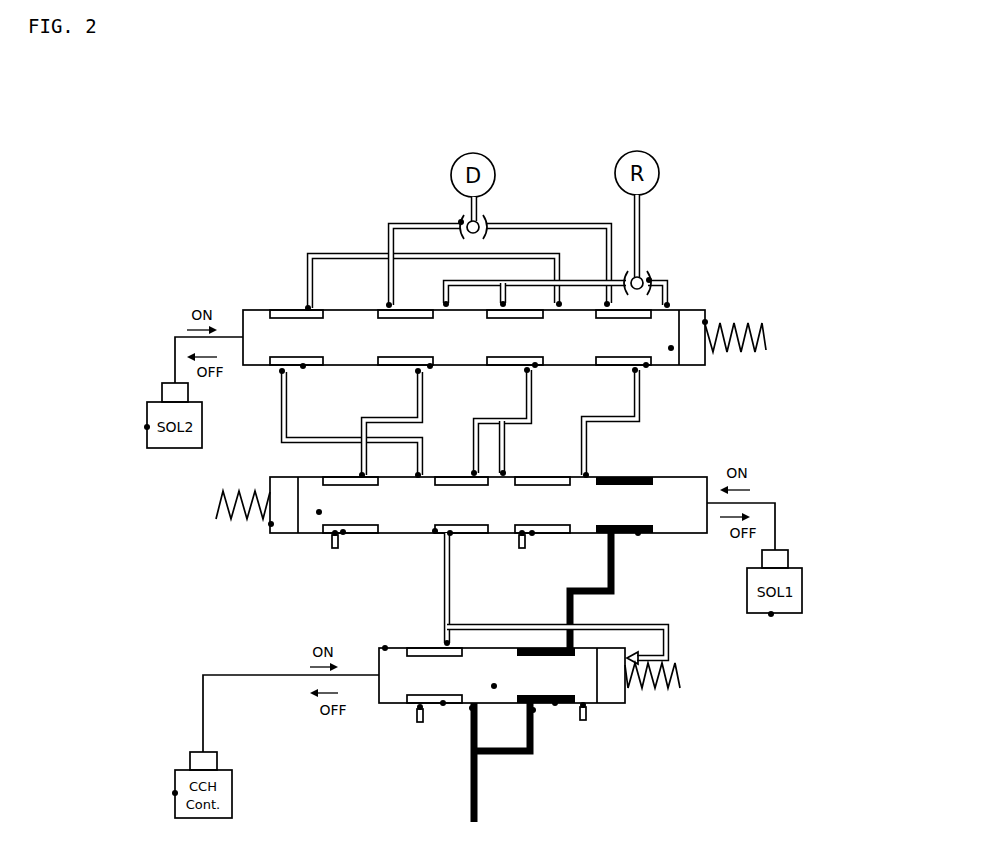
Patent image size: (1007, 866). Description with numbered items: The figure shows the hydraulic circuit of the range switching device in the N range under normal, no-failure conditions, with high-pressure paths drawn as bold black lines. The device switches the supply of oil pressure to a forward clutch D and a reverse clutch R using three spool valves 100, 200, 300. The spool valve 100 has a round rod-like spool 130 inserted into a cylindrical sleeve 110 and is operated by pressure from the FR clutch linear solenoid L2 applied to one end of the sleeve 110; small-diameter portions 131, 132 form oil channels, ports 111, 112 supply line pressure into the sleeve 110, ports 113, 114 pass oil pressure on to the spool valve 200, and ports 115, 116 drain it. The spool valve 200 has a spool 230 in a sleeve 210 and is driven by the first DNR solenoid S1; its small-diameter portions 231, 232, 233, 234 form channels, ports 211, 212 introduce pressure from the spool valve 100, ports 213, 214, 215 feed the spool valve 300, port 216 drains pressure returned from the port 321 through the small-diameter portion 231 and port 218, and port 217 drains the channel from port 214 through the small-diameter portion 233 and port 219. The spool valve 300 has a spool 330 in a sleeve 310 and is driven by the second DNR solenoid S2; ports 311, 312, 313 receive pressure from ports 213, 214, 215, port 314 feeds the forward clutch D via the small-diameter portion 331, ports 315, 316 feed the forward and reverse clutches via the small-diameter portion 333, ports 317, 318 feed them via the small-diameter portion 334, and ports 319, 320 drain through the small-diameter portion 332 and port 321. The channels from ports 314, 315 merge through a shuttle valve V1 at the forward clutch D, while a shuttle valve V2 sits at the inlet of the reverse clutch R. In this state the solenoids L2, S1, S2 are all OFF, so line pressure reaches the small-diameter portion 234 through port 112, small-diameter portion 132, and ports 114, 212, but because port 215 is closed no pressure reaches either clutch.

The spool valve 100 is at (628, 718).
The sleeve 110 is at (383, 646).
The port 111 is at (471, 711).
The port 112 is at (535, 713).
The port 113 is at (445, 641).
The port 114 is at (568, 643).
The port 115 is at (419, 711).
The port 116 is at (585, 708).
The spool 130 is at (495, 689).
The small-diameter portion 131 is at (442, 706).
The small-diameter portion 132 is at (557, 706).
The spool valve 200 is at (205, 498).
The sleeve 210 is at (269, 526).
The port 211 is at (452, 536).
The port 212 is at (614, 538).
The port 213 is at (416, 474).
The port 214 is at (472, 471).
The port 215 is at (588, 473).
The port 216 is at (360, 474).
The port 217 is at (505, 471).
The port 218 is at (334, 536).
The port 219 is at (534, 535).
The spool 230 is at (317, 514).
The small-diameter portion 231 is at (344, 535).
The small-diameter portion 232 is at (434, 534).
The small-diameter portion 233 is at (521, 536).
The small-diameter portion 234 is at (640, 536).
The spool valve 300 is at (727, 297).
The sleeve 310 is at (708, 322).
The port 311 is at (280, 373).
The port 312 is at (525, 372).
The port 313 is at (633, 372).
The port 314 is at (305, 307).
The port 315 is at (560, 301).
The port 316 is at (504, 301).
The port 317 is at (606, 301).
The port 318 is at (670, 304).
The port 319 is at (387, 303).
The port 320 is at (445, 301).
The port 321 is at (416, 373).
The spool 330 is at (674, 349).
The small-diameter portion 331 is at (304, 369).
The small-diameter portion 332 is at (431, 369).
The small-diameter portion 333 is at (537, 368).
The small-diameter portion 334 is at (648, 368).
The shuttle valve V1 is at (459, 220).
The shuttle valve V2 is at (651, 278).
The first DNR solenoid S1 is at (772, 617).
The second DNR solenoid S2 is at (145, 427).
The FR clutch linear solenoid L2 is at (173, 793).